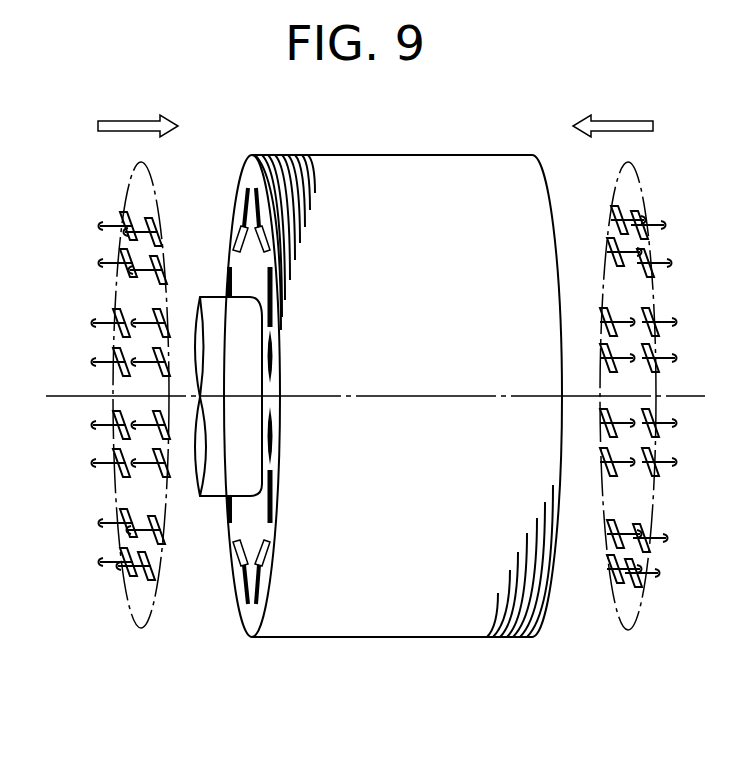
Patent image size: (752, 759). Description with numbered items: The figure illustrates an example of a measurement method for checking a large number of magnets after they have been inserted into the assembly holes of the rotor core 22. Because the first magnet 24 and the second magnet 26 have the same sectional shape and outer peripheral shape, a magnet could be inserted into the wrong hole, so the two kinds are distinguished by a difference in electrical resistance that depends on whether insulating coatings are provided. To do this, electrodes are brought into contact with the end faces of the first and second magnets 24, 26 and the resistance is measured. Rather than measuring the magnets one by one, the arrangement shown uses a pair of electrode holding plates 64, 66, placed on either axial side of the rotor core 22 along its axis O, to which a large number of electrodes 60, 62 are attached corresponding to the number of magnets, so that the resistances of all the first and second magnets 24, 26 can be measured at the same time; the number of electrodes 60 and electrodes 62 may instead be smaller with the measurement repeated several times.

The rotor core 22 is at (424, 170).
The first magnet 24 is at (257, 199).
The second magnet 26 is at (272, 185).
The electrodes 60 is at (158, 235).
The electrodes 62 is at (612, 222).
The electrode holding plate 64 is at (141, 630).
The electrode holding plate 66 is at (628, 632).
The optical axis O is at (361, 396).